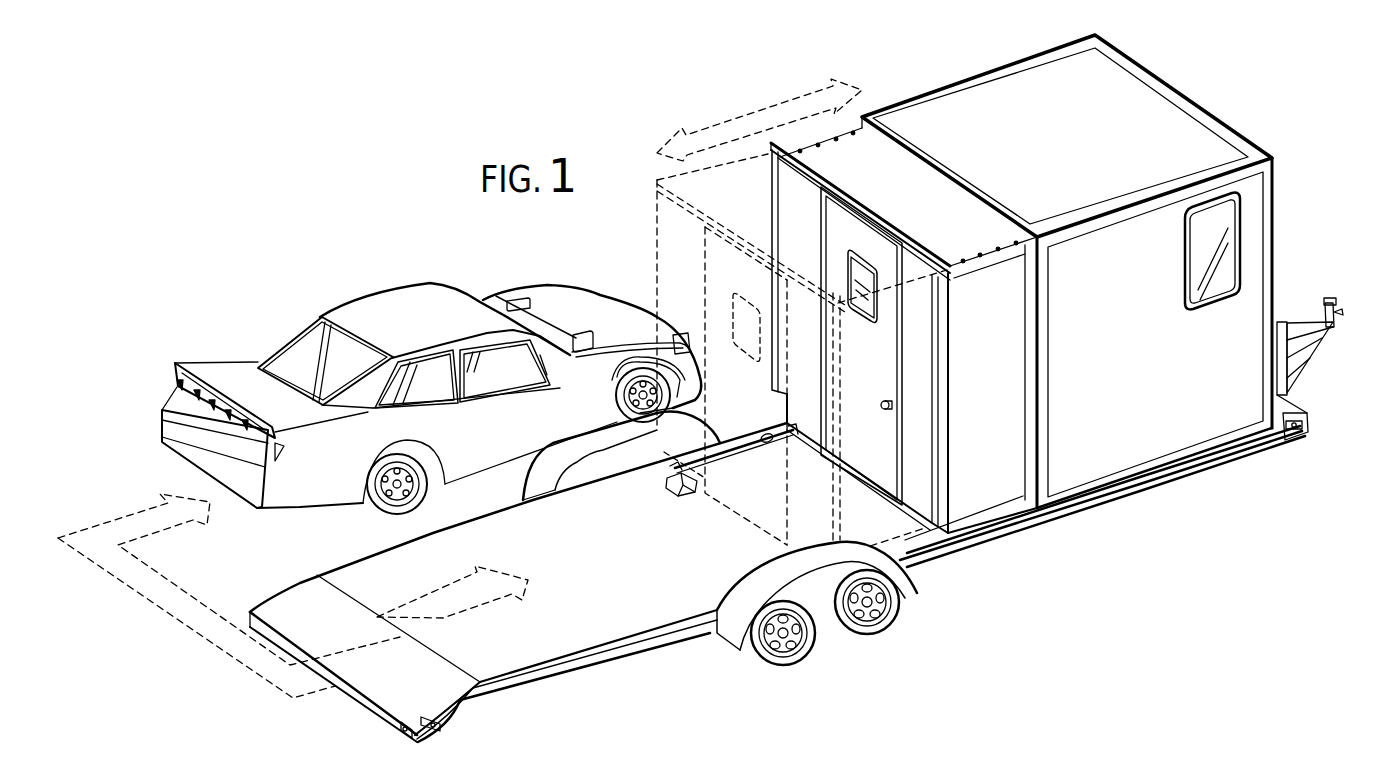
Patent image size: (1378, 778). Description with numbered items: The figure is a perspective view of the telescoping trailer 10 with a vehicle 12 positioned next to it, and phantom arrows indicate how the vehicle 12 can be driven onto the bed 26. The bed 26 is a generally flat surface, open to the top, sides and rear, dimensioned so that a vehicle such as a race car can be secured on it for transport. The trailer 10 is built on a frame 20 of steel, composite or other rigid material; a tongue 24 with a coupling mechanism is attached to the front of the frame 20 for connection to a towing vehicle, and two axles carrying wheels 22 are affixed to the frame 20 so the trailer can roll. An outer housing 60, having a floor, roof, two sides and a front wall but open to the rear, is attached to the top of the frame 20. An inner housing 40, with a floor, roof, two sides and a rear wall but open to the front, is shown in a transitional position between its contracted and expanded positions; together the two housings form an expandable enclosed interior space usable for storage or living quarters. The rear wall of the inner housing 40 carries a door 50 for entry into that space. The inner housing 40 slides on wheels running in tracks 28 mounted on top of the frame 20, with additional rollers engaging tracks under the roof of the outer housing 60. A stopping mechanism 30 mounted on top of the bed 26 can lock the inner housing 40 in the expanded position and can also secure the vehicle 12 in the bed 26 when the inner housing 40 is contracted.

The telescoping trailer 10 is at (1152, 536).
The vehicle 12 is at (405, 303).
The frame 20 is at (984, 538).
The wheels 22 is at (873, 633).
The tongue 24 is at (1310, 330).
The bed 26 is at (600, 579).
The tracks 28 is at (755, 442).
The stopping mechanism 30 is at (681, 493).
The inner housing 40 is at (990, 446).
The door 50 is at (863, 237).
The outer housing 60 is at (1082, 141).